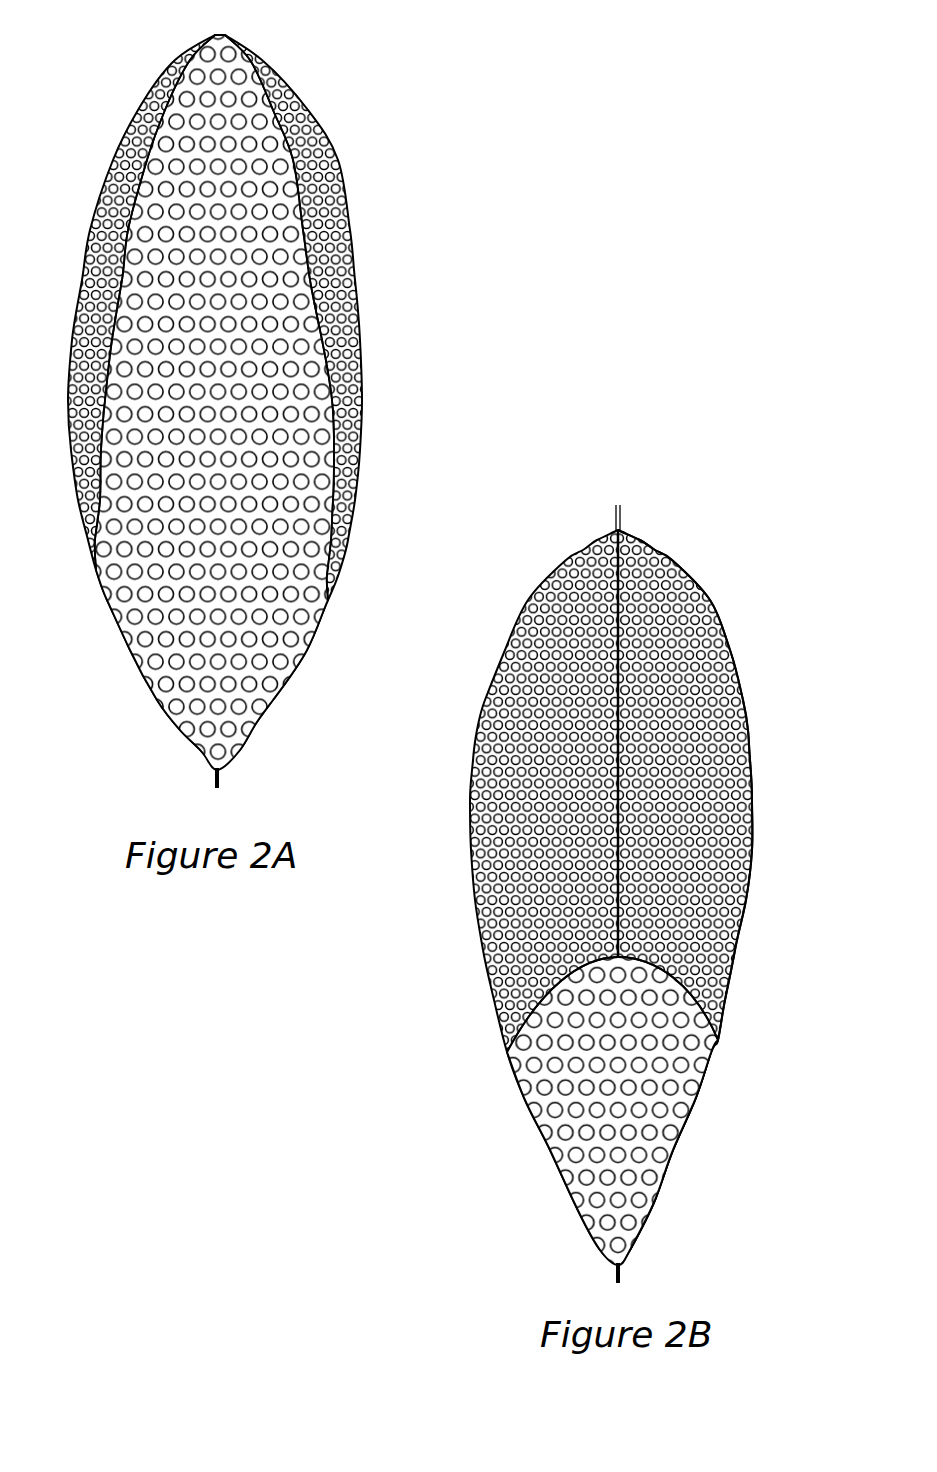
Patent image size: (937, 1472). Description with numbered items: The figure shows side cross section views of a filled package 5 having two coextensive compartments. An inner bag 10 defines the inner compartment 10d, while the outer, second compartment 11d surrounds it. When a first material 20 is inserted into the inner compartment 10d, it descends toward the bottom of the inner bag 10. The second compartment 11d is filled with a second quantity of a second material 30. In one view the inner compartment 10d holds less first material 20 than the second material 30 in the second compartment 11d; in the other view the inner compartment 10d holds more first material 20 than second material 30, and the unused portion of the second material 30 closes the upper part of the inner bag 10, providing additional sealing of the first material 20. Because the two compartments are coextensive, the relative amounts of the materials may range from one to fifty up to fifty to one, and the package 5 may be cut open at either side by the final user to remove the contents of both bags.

In FIG. 2A, the filled package 5 is at (268, 411).
In FIG. 2B, the filled package 5 is at (598, 883).
In FIG. 2B, the inner bag 10 is at (629, 874).
In FIG. 2A, the inner compartment 10d is at (147, 652).
In FIG. 2B, the inner compartment 10d is at (680, 1136).
In FIG. 2B, the second compartment 11d is at (742, 818).
In FIG. 2A, the first material 20 is at (160, 695).
In FIG. 2B, the first material 20 is at (563, 1091).
In FIG. 2A, the second material 30 is at (138, 109).
In FIG. 2B, the second material 30 is at (587, 551).